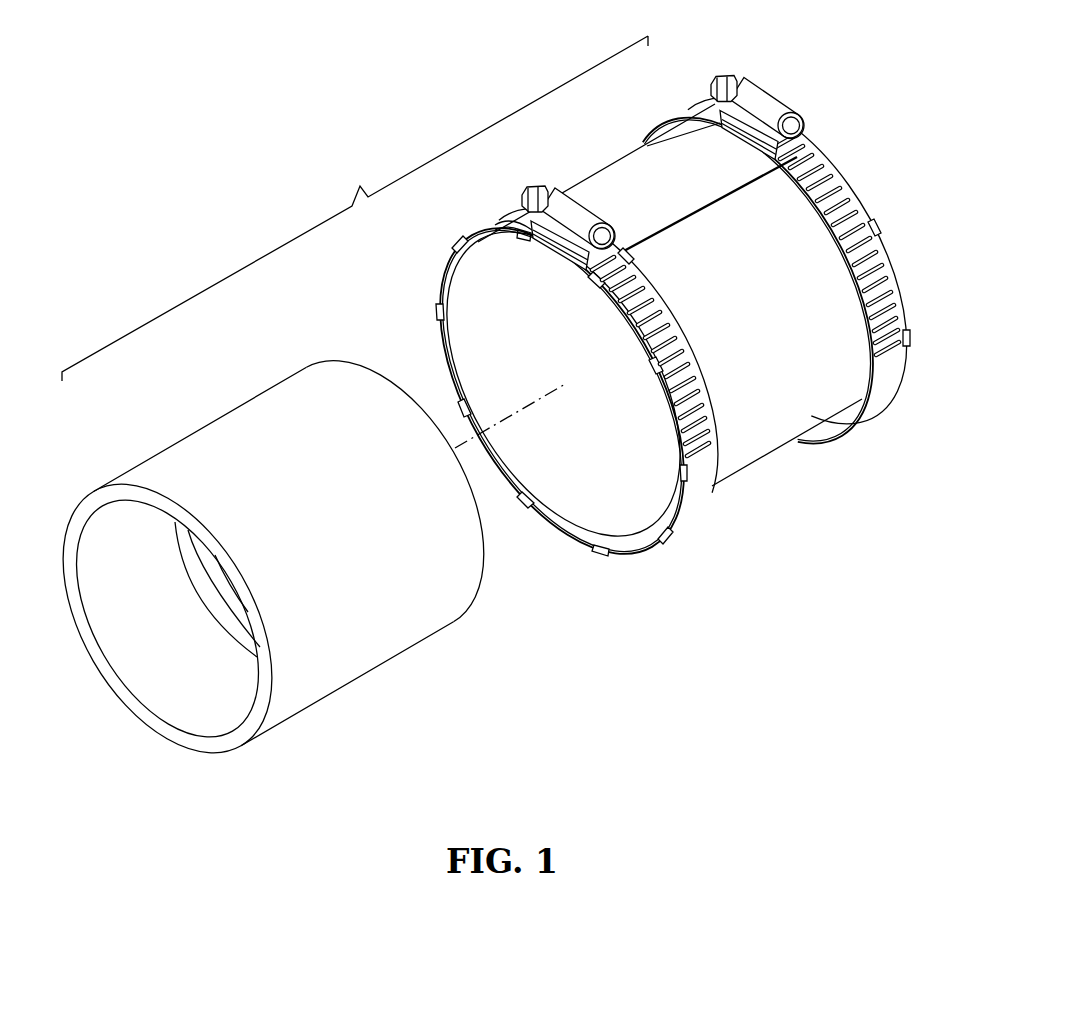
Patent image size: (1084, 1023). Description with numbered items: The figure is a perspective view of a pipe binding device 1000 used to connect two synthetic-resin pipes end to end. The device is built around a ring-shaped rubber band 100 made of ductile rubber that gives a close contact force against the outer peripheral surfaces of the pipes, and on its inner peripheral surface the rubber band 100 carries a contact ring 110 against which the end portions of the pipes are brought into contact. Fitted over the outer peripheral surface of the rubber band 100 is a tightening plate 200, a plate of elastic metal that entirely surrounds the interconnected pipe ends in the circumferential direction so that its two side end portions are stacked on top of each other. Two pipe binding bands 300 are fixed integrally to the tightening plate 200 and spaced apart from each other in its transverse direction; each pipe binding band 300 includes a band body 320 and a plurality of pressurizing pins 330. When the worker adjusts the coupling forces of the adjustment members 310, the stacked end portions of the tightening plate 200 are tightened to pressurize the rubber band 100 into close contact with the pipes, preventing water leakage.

The pipe binding device 1000 is at (355, 208).
The rubber band 100 is at (352, 661).
The contact ring 110 is at (215, 612).
The tightening plate 200 is at (610, 187).
The pipe binding band 300 is at (664, 318).
The adjustment member 310 is at (770, 107).
The band body 320 is at (890, 380).
The pressurizing pins 330 is at (462, 252).